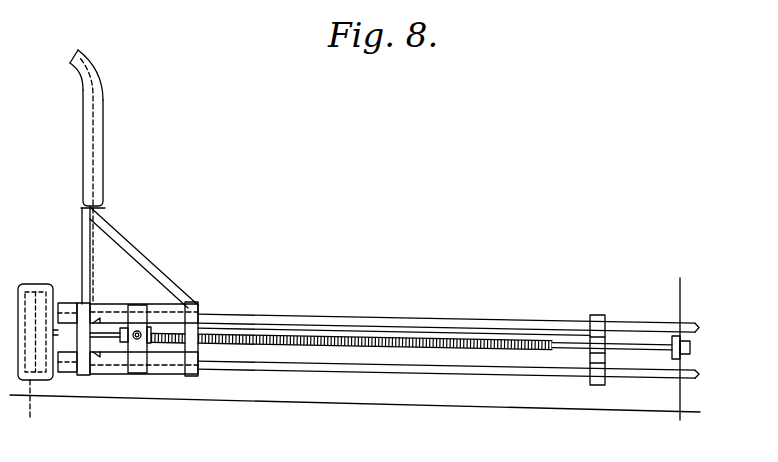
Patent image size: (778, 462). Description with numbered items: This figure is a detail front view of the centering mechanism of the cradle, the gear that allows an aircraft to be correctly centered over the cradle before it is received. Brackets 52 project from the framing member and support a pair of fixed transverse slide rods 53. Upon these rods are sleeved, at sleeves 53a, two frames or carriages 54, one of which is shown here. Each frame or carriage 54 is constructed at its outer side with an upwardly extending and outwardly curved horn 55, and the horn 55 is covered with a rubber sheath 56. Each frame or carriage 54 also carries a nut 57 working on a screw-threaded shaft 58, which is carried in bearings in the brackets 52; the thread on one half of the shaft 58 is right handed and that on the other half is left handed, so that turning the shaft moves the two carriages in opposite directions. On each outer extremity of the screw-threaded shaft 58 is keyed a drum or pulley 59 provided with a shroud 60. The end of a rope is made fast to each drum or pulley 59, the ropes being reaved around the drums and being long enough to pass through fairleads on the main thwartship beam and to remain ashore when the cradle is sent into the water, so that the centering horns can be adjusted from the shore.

The brackets 52 is at (73, 303).
The fixed transverse slide rods 53 is at (355, 320).
The sleeves 53a is at (97, 318).
The frame or carriage 54 is at (170, 375).
The horn 55 is at (93, 108).
The rubber sheath 56 is at (97, 68).
The nut 57 is at (127, 342).
The screw-threaded shaft 58 is at (400, 346).
The drum or pulley 59 is at (35, 365).
The shroud 60 is at (42, 285).